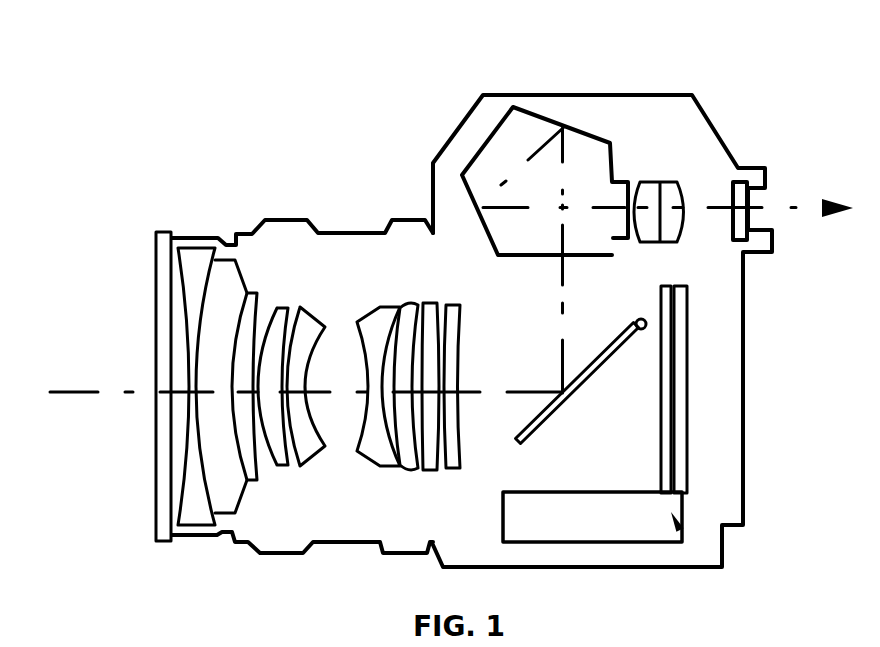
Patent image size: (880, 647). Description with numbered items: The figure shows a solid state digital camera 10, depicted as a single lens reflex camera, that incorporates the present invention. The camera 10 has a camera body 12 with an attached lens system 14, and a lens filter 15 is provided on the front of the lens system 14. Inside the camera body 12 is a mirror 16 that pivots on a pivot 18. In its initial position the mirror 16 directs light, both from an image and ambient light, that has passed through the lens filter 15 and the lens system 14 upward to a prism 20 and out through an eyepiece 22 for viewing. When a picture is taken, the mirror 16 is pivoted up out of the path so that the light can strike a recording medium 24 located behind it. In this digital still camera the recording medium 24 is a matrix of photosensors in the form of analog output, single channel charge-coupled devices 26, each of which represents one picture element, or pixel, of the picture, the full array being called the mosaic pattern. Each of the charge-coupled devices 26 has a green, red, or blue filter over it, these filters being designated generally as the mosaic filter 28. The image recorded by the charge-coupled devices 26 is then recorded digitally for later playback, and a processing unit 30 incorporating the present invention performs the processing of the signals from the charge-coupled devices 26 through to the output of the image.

The solid state digital camera 10 is at (298, 80).
The camera body 12 is at (415, 115).
The lens system 14 is at (271, 185).
The lens filter 15 is at (160, 543).
The mirror 16 is at (592, 380).
The pivot 18 is at (647, 322).
The prism 20 is at (598, 139).
The eyepiece 22 is at (750, 197).
The recording medium 24 is at (680, 530).
The charge-coupled devices 26 is at (683, 455).
The mosaic filter 28 is at (680, 398).
The processing unit 30 is at (607, 533).